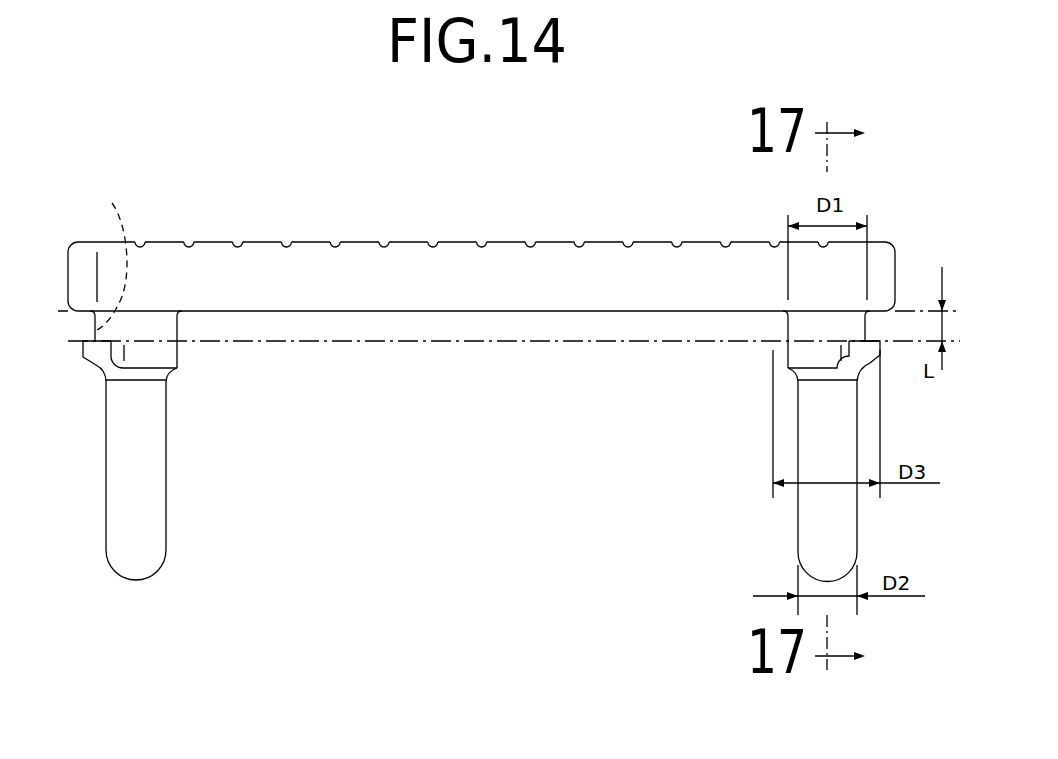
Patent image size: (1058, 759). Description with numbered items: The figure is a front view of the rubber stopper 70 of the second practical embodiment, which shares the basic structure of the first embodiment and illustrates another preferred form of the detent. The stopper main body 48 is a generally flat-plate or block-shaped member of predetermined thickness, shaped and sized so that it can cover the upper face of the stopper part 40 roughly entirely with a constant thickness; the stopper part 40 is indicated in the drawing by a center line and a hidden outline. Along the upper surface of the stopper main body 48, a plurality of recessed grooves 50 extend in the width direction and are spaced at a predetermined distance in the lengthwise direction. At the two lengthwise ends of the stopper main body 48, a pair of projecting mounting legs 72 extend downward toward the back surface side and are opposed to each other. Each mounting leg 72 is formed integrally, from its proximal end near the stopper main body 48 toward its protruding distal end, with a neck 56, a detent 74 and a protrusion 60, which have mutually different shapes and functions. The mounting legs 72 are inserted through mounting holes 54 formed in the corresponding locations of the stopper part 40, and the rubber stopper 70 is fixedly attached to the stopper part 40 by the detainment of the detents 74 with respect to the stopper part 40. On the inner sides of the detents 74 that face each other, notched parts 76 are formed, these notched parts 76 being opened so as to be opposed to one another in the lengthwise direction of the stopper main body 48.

The stopper part 40 is at (423, 330).
The stopper main body 48 is at (407, 260).
The recessed grooves 50 is at (189, 247).
The mounting holes 54 is at (112, 203).
The neck 56 is at (163, 325).
The protrusion 60 is at (153, 483).
The rubber stopper 70 is at (479, 240).
The mounting legs 72 is at (480, 446).
The detents 74 is at (100, 362).
The notched parts 76 is at (162, 353).